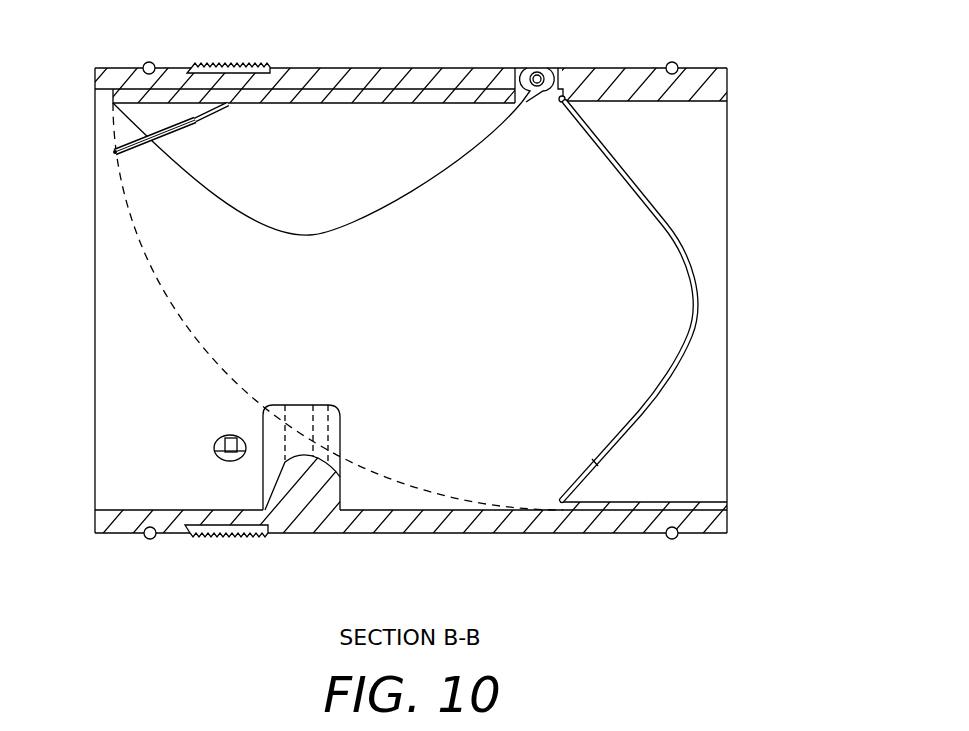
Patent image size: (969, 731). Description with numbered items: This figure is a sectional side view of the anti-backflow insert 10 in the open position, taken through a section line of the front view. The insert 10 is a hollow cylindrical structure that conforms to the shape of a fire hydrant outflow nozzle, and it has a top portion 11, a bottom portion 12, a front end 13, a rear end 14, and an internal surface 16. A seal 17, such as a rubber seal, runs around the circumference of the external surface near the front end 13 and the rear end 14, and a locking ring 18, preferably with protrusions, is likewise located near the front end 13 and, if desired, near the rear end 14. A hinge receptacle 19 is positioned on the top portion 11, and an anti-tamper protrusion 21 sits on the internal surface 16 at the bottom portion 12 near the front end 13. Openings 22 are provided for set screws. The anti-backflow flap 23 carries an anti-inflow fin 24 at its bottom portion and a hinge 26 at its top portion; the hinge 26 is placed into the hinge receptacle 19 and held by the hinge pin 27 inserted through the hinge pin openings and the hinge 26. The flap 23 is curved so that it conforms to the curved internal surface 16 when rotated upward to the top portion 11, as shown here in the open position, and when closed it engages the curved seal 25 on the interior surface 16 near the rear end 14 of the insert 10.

The anti-backflow insert 10 is at (752, 76).
The top portion 11 is at (457, 73).
The bottom portion 12 is at (455, 533).
The front end 13 is at (96, 515).
The rear end 14 is at (727, 515).
The internal surface 16 is at (100, 294).
The seal 17 is at (151, 62).
The locking ring 18 is at (258, 63).
The hinge receptacle 19 is at (563, 68).
The anti-tamper protrusion 21 is at (332, 408).
The openings for set screws 22 is at (213, 448).
The anti-backflow flap 23 is at (336, 222).
The anti-inflow fin 24 is at (150, 138).
The curved seal 25 is at (637, 181).
The hinge 26 is at (529, 96).
The hinge pin 27 is at (541, 71).